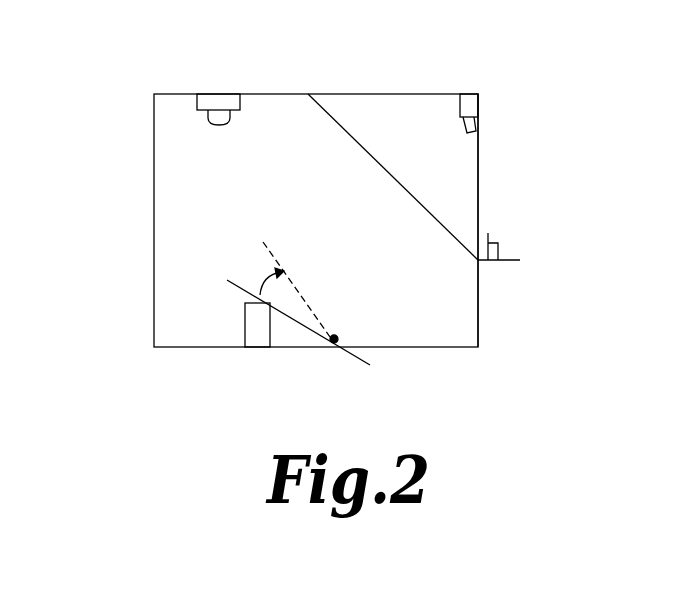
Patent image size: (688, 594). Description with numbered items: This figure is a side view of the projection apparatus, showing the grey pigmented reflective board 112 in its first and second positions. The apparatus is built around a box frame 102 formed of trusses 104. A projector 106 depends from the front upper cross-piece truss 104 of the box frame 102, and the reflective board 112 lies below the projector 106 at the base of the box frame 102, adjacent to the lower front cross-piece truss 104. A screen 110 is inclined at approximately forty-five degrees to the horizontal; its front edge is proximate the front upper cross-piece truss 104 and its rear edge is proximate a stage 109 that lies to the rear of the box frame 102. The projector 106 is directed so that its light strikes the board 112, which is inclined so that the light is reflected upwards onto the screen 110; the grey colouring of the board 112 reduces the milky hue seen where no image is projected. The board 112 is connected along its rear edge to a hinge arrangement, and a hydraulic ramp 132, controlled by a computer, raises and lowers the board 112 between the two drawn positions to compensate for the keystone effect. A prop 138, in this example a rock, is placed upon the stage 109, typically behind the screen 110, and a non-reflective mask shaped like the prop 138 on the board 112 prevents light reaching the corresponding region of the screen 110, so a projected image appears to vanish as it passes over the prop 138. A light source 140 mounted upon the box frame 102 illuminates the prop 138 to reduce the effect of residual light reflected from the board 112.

The box frame 102 is at (154, 209).
The trusses 104 is at (479, 216).
The projector 106 is at (212, 100).
The stage 109 is at (505, 262).
The screen 110 is at (395, 175).
The grey pigmented reflective board 112 is at (302, 323).
The hydraulic ramp 132 is at (252, 342).
The prop 138 is at (490, 262).
The light source 140 is at (470, 98).